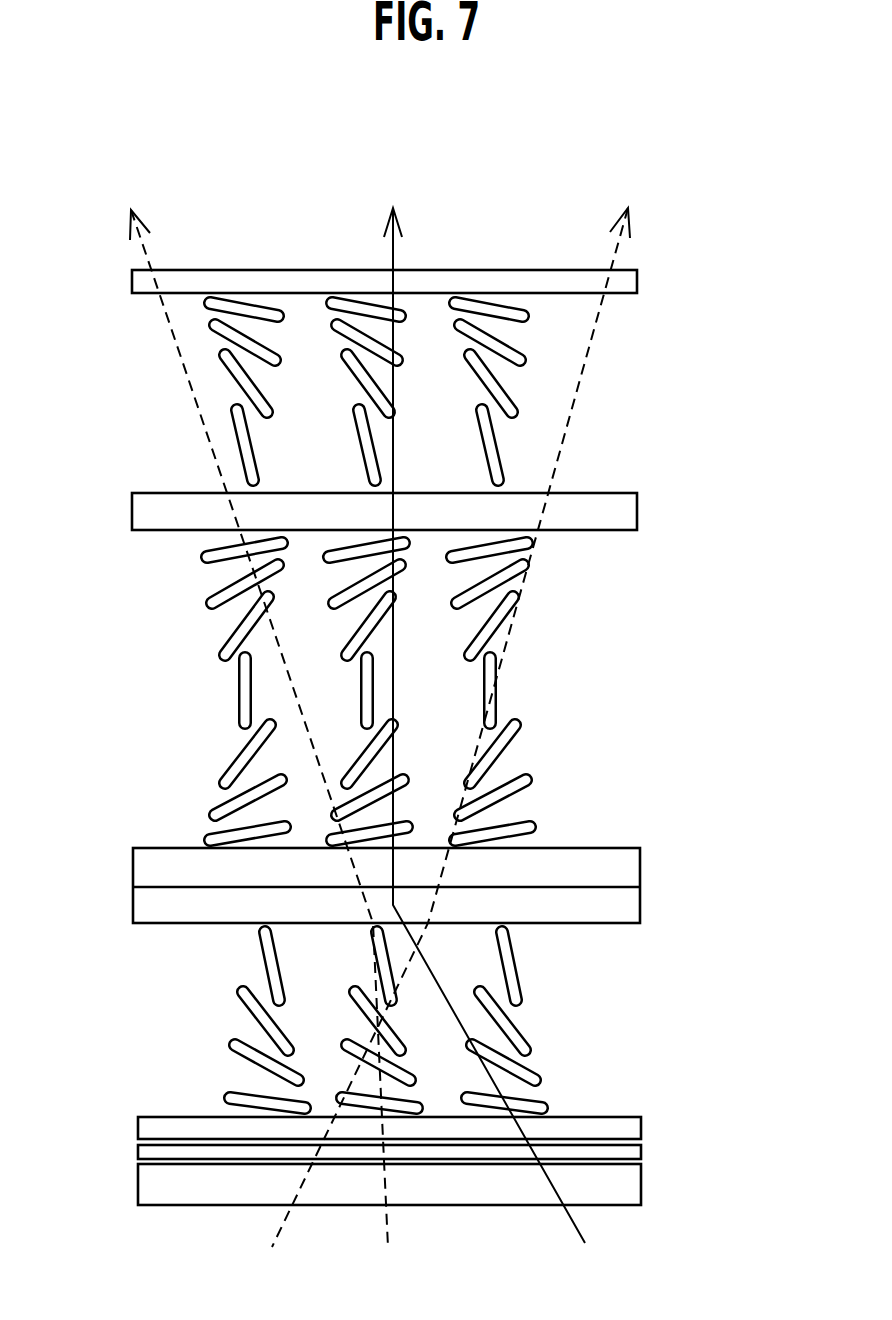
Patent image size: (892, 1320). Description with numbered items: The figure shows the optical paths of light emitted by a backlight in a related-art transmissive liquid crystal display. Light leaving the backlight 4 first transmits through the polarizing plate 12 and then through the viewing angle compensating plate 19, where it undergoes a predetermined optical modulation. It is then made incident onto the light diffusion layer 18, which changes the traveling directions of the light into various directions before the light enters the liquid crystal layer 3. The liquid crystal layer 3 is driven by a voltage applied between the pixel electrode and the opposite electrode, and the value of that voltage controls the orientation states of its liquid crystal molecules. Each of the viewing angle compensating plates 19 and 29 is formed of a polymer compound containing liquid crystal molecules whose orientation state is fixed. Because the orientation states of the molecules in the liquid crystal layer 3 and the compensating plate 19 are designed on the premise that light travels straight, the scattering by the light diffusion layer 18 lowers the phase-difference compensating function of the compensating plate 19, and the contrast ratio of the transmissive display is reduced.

The viewing angle compensating plate 29 is at (650, 310).
The liquid crystal layer 3 is at (650, 541).
The light diffusion layer 18 is at (640, 898).
The viewing angle compensating plate 19 is at (653, 938).
The polarizing plate 12 is at (641, 1147).
The backlight 4 is at (641, 1178).